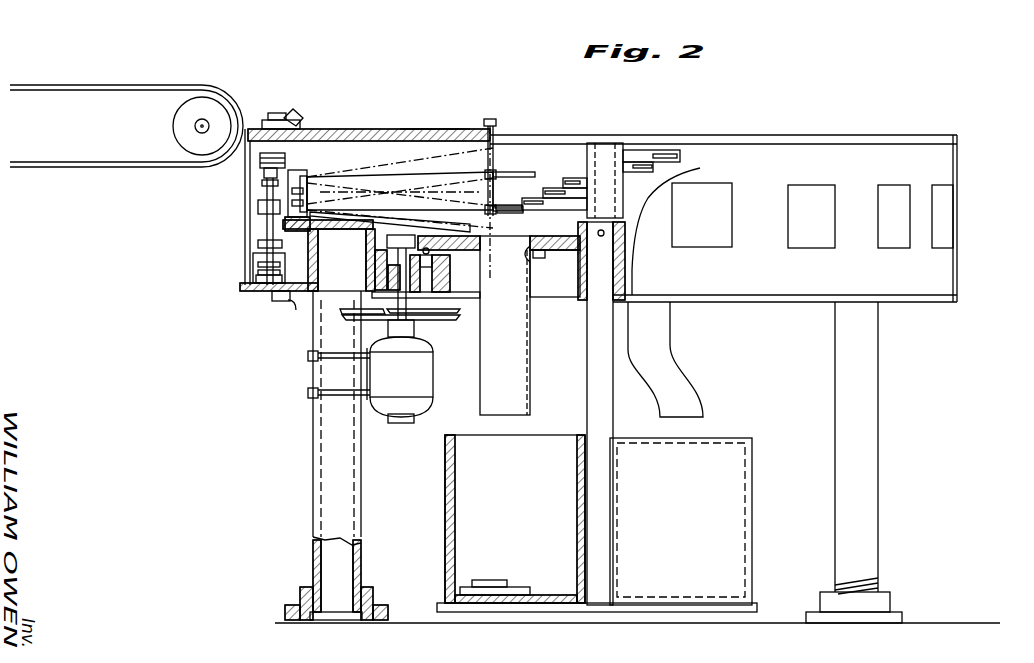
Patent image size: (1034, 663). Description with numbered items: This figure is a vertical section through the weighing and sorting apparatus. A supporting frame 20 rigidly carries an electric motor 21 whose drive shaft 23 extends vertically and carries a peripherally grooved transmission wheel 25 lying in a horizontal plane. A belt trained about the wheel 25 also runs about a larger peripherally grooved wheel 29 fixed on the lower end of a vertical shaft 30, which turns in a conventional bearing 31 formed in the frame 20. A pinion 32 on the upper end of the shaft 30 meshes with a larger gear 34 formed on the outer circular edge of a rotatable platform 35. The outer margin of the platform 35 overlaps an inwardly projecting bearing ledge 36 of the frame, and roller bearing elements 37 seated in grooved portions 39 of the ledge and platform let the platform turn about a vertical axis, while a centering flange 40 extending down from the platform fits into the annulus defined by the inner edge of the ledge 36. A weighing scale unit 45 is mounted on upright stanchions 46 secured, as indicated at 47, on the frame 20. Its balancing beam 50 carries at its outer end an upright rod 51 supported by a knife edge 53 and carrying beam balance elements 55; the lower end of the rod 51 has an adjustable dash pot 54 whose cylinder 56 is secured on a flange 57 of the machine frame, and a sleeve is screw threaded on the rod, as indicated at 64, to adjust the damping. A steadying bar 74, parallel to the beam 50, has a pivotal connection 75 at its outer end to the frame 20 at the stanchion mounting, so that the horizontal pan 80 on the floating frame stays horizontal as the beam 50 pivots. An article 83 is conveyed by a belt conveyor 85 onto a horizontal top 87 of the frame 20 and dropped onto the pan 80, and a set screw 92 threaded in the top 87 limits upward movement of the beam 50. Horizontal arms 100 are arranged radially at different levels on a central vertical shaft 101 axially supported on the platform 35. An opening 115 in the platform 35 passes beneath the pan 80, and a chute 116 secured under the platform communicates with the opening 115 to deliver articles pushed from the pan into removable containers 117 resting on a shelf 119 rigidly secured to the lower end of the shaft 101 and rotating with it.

The supporting frame 20 is at (966, 274).
The electric motor 21 is at (428, 384).
The drive shaft 23 is at (415, 345).
The transmission wheel 25 is at (318, 355).
The larger peripherally grooved wheel 29 is at (428, 322).
The vertical shaft 30 is at (376, 262).
The bearing 31 is at (372, 292).
The pinion 32 is at (387, 244).
The gear 34 is at (484, 236).
The rotatable platform 35 is at (560, 240).
The bearing ledge 36 is at (440, 272).
The roller bearing elements 37 is at (462, 270).
The grooved portions 39 is at (428, 240).
The centering flange 40 is at (448, 297).
The weighing scale unit 45 is at (397, 162).
The upright stanchions 46 is at (300, 193).
The securing means of stanchions 47 is at (258, 262).
The balancing beam 50 is at (396, 188).
The upright rod 51 is at (295, 205).
The knife edge 53 is at (300, 178).
The adjustable dash pot 54 is at (261, 306).
The beam balance elements 55 is at (286, 158).
The cylinder 56 is at (300, 303).
The flange 57 is at (308, 298).
The screw threaded connection 64 is at (262, 282).
The steadying bar 74 is at (445, 235).
The pivotal connection 75 is at (268, 242).
The horizontal pan 80 is at (530, 170).
The article 83 is at (300, 116).
The belt conveyor 85 is at (75, 80).
The horizontal top 87 is at (457, 128).
The set screw 92 is at (490, 118).
The horizontal arms 100 is at (667, 175).
The central vertical shaft 101 is at (598, 338).
The opening 115 is at (534, 262).
The chute 116 is at (630, 372).
The removable containers 117 is at (583, 435).
The shelf 119 is at (442, 604).